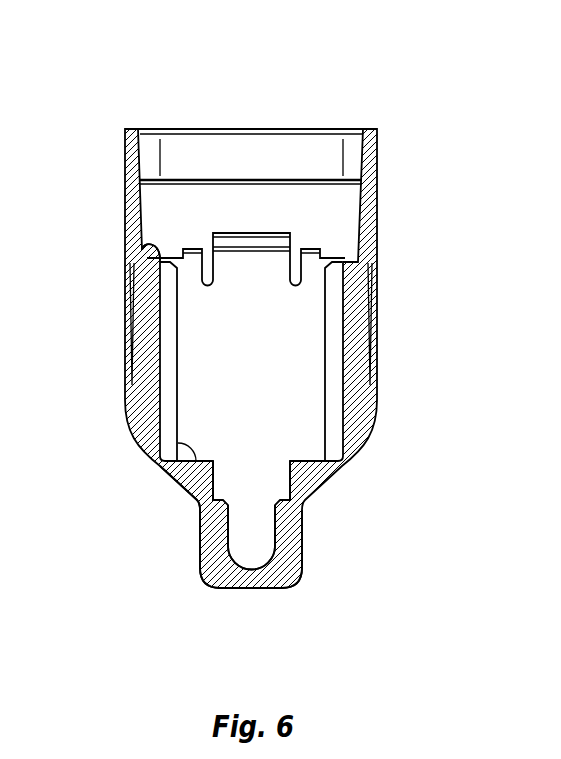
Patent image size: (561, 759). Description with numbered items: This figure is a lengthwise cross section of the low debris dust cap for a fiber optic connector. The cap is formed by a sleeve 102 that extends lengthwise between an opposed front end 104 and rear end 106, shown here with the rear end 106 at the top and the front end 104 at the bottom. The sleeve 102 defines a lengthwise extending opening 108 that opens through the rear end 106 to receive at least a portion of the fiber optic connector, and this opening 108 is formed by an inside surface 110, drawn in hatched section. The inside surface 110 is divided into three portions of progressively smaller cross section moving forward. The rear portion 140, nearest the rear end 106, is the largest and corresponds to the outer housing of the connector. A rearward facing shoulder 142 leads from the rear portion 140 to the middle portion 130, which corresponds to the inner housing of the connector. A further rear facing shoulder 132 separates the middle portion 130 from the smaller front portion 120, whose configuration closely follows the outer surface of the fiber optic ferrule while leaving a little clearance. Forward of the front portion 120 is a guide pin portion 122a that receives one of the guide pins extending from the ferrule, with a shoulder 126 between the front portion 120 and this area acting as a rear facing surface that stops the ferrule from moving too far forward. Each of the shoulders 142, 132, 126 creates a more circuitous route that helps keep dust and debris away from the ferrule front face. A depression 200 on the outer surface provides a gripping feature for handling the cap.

The rear end 106 is at (320, 110).
The inside surface 110 is at (335, 322).
The depression 200 is at (130, 317).
The rear portion 140 is at (243, 214).
The shoulder 142 is at (148, 244).
The middle portion 130 is at (297, 412).
The lengthwise extending opening 108 is at (223, 387).
The shoulder 132 is at (197, 458).
The front portion 120 is at (237, 485).
The shoulder 126 is at (200, 497).
The sleeve 102 is at (303, 543).
The guide pin portion 122a is at (268, 550).
The front end 104 is at (200, 598).